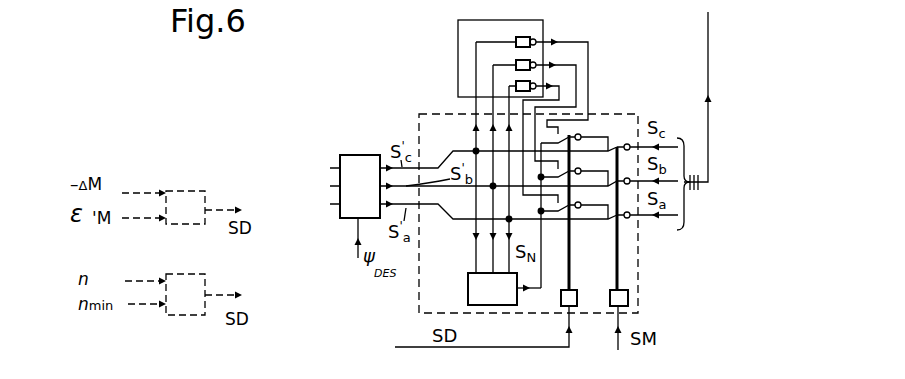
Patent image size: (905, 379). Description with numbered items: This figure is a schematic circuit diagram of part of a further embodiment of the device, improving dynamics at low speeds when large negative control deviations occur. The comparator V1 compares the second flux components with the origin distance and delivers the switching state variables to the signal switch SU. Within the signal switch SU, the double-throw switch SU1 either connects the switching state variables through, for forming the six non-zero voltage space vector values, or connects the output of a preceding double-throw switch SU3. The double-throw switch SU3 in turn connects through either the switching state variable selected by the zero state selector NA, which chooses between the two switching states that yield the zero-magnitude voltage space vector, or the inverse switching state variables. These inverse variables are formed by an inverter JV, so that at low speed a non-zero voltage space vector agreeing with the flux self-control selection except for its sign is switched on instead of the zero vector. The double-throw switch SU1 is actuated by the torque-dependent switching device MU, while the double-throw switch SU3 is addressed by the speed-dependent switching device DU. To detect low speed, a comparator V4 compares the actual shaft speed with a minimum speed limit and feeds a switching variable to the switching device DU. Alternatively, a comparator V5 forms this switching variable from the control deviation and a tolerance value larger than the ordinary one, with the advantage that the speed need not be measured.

The comparator V1 is at (355, 206).
The comparator V4 is at (183, 294).
The comparator V5 is at (182, 207).
The signal switch SU is at (528, 213).
The double-throw switch SU1 is at (641, 204).
The double-throw switch SU3 is at (575, 212).
The inverter JV is at (504, 111).
The zero state selector NA is at (504, 289).
The speed-dependent switching device DU is at (486, 318).
The torque-dependent switching device MU is at (605, 320).